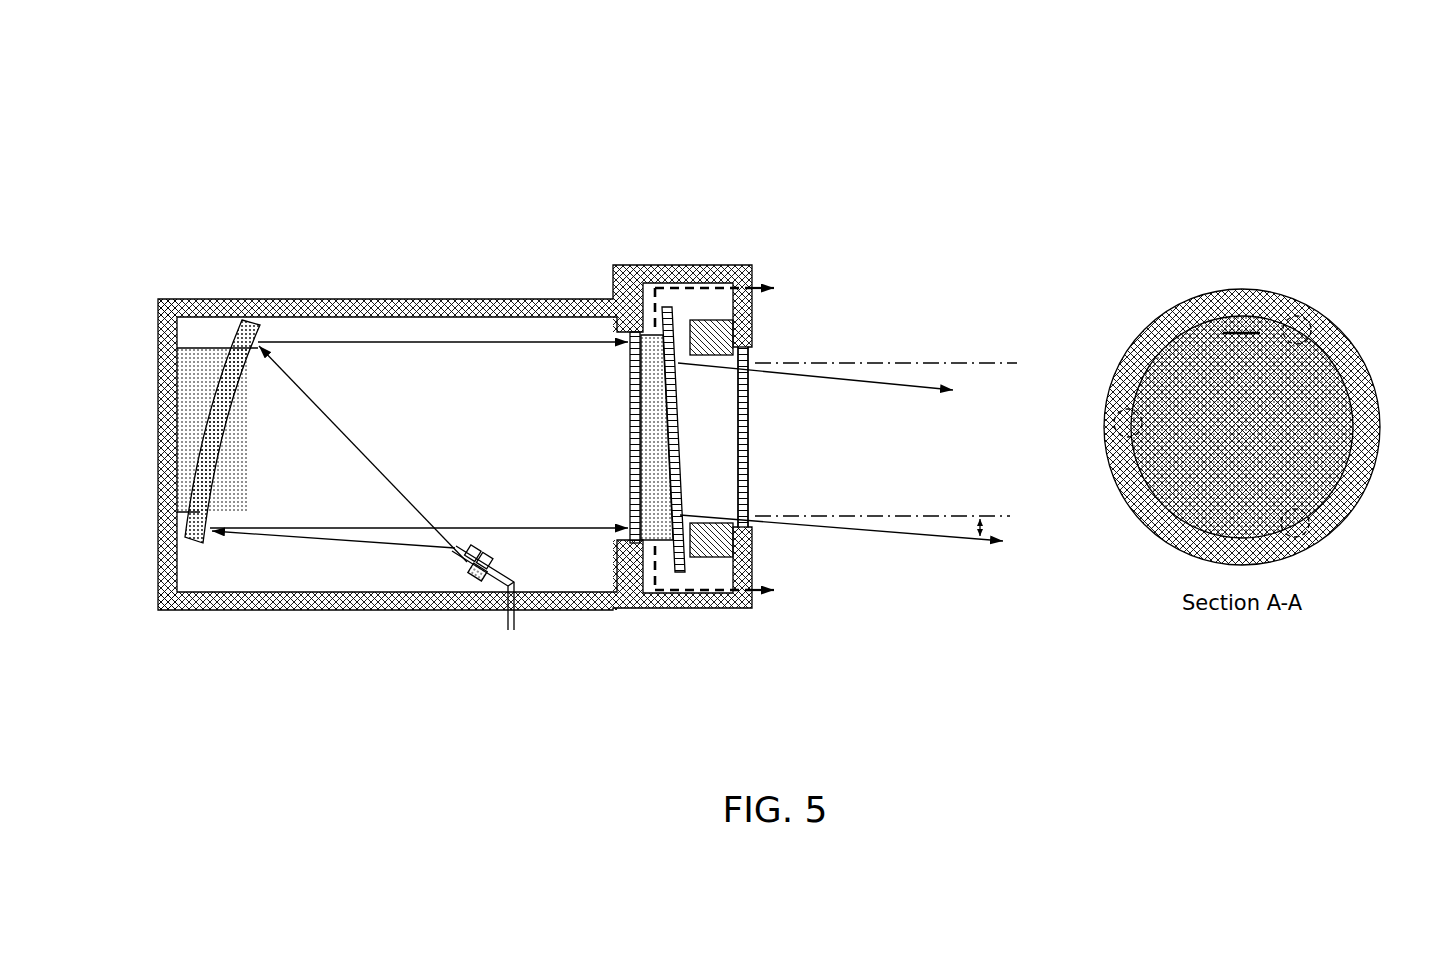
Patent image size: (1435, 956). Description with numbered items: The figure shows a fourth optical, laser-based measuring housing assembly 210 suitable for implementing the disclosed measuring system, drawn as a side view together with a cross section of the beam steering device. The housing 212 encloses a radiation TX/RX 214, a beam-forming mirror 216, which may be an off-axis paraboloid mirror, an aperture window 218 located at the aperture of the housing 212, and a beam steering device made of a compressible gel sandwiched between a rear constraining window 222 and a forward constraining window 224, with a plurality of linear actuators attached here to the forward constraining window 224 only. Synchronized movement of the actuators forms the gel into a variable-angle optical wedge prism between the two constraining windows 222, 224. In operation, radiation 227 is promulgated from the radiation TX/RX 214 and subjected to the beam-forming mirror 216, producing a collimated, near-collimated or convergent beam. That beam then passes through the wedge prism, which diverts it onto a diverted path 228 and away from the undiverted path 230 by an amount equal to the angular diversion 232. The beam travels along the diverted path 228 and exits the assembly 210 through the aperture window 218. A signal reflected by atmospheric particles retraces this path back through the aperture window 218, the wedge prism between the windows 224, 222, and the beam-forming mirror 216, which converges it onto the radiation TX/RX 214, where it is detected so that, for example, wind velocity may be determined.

The housing assembly 210 is at (316, 115).
The housing 212 is at (317, 297).
The radiation TX/RX 214 is at (449, 573).
The beam-forming mirror 216 is at (227, 419).
The aperture window 218 is at (753, 400).
The rear constraining window 222 is at (631, 327).
The forward constraining window 224 is at (666, 304).
The radiation 227 is at (320, 401).
The diverted path 228 is at (930, 386).
The undiverted path 230 is at (832, 358).
The angular diversion 232 is at (930, 560).